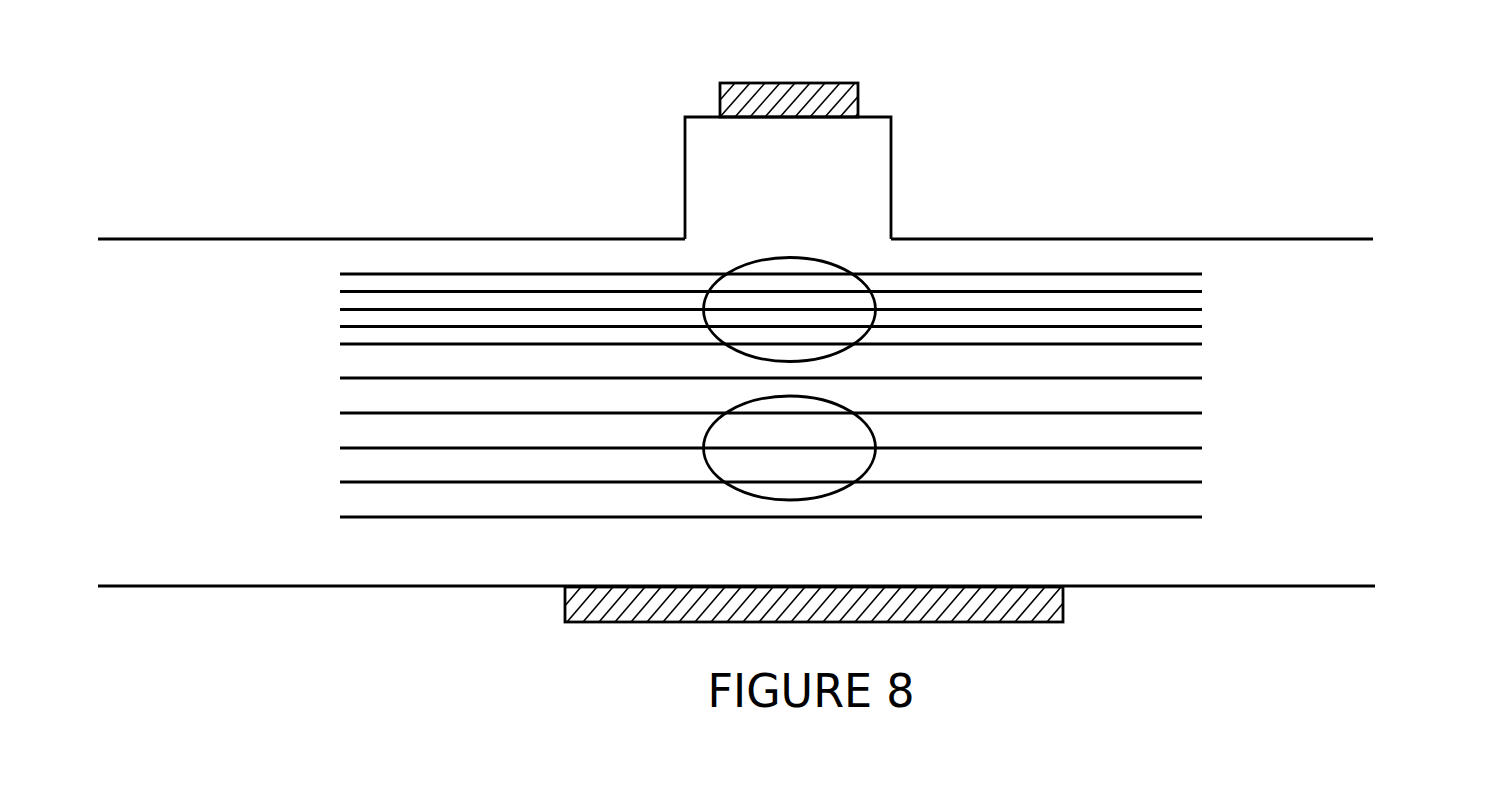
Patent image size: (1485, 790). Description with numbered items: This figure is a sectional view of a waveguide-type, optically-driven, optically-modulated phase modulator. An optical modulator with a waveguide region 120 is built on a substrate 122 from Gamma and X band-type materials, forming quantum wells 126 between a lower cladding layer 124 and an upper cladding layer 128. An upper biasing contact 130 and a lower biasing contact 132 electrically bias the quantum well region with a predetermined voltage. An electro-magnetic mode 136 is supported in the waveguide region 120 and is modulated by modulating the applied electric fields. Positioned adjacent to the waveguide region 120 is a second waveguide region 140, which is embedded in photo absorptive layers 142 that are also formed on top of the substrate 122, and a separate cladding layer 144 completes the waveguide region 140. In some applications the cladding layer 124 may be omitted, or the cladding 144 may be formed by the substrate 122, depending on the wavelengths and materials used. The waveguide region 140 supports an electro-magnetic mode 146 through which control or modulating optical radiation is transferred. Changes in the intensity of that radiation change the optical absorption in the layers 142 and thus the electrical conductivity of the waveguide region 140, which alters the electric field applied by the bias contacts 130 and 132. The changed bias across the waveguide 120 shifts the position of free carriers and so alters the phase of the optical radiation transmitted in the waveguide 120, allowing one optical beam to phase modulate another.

The waveguide region 120 is at (1389, 84).
The substrate 122 is at (1337, 566).
The lower cladding layer 124 is at (1177, 364).
The quantum wells 126 is at (1216, 274).
The upper cladding layer 128 is at (865, 203).
The upper biasing contact 130 is at (797, 90).
The lower biasing contact 132 is at (1052, 603).
The electro-magnetic mode 136 is at (703, 295).
The second waveguide region 140 is at (327, 377).
The photo absorptive layers 142 is at (1216, 413).
The cladding layer 144 is at (1185, 503).
The electro-magnetic mode 146 is at (723, 473).